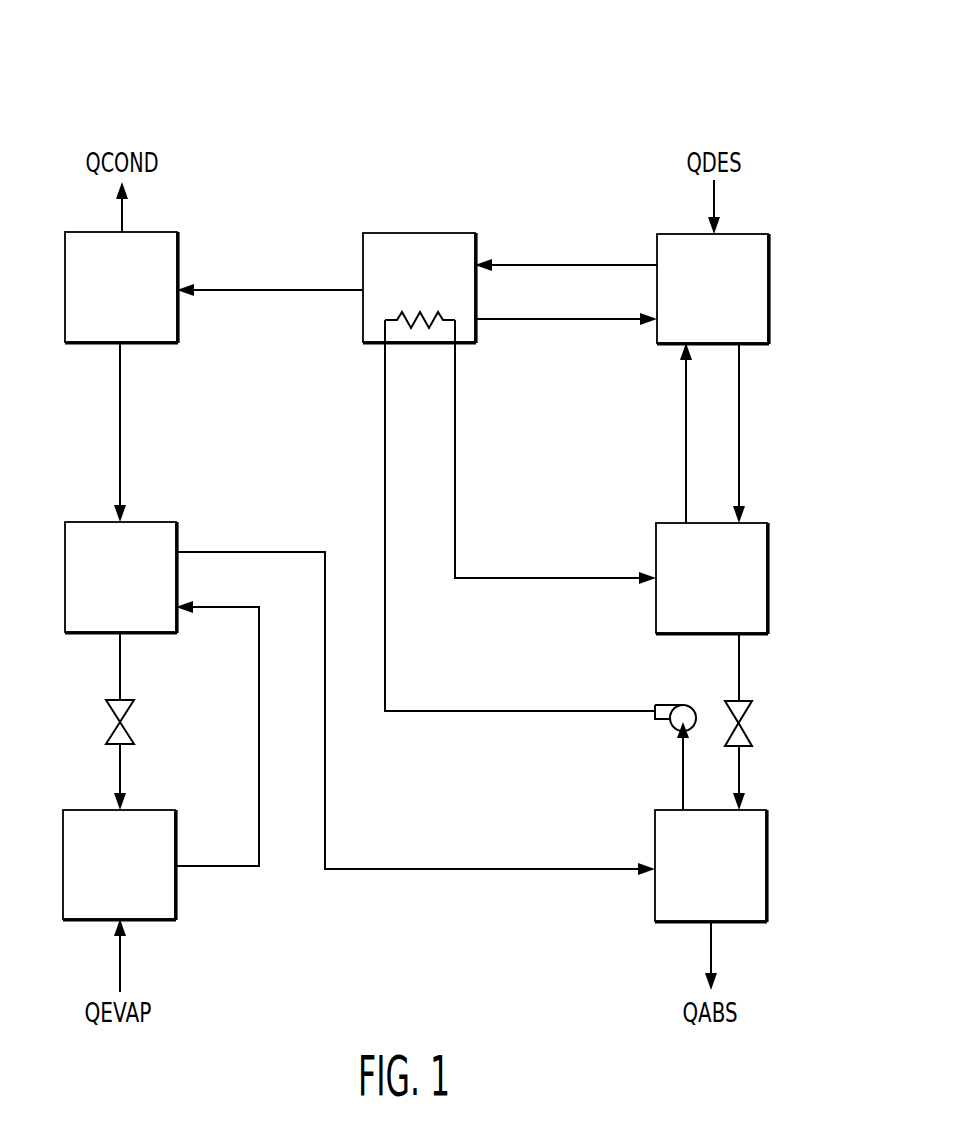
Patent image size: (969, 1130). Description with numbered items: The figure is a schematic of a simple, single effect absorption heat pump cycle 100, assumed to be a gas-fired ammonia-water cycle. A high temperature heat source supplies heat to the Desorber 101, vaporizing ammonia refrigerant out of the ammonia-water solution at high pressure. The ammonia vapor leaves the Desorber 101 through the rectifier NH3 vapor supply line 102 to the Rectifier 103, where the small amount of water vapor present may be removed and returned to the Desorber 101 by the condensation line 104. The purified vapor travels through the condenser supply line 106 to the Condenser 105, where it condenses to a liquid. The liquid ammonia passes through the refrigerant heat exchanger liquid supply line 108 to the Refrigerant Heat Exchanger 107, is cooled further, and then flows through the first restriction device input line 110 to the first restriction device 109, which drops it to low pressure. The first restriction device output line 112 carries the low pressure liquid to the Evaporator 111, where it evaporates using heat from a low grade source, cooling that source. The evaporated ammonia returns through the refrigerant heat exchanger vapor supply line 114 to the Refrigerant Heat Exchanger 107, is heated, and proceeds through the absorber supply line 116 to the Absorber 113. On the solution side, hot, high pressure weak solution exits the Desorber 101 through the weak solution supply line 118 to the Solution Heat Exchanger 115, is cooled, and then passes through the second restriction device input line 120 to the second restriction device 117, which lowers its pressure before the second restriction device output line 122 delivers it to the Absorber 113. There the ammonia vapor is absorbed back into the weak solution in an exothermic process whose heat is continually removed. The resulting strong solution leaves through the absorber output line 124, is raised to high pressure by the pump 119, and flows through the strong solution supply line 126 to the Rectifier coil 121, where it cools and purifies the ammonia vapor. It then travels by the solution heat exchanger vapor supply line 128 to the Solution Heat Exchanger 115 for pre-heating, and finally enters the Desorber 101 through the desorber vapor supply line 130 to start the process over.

The absorption heat pump cycle 100 is at (718, 78).
The Desorber 101 is at (680, 234).
The rectifier NH3 vapor supply line 102 is at (565, 265).
The Rectifier 103 is at (435, 233).
The condensation line 104 is at (567, 321).
The Condenser 105 is at (172, 232).
The condenser supply line 106 is at (268, 292).
The Refrigerant Heat Exchanger 107 is at (160, 522).
The refrigerant heat exchanger liquid supply line 108 is at (120, 435).
The first restriction device 109 is at (105, 728).
The first restriction device input line 110 is at (120, 665).
The Evaporator 111 is at (175, 908).
The first restriction device output line 112 is at (120, 765).
The Absorber 113 is at (655, 908).
The refrigerant heat exchanger vapor supply line 114 is at (259, 738).
The Solution Heat Exchanger 115 is at (656, 553).
The absorber supply line 116 is at (248, 552).
The second restriction device 117 is at (745, 715).
The weak solution supply line 118 is at (739, 443).
The pump 119 is at (672, 726).
The second restriction device input line 120 is at (739, 662).
The Rectifier coil 121 is at (396, 318).
The second restriction device output line 122 is at (739, 765).
The absorber output line 124 is at (683, 777).
The strong solution supply line 126 is at (512, 711).
The solution heat exchanger vapor supply line 128 is at (454, 470).
The desorber vapor supply line 130 is at (686, 437).